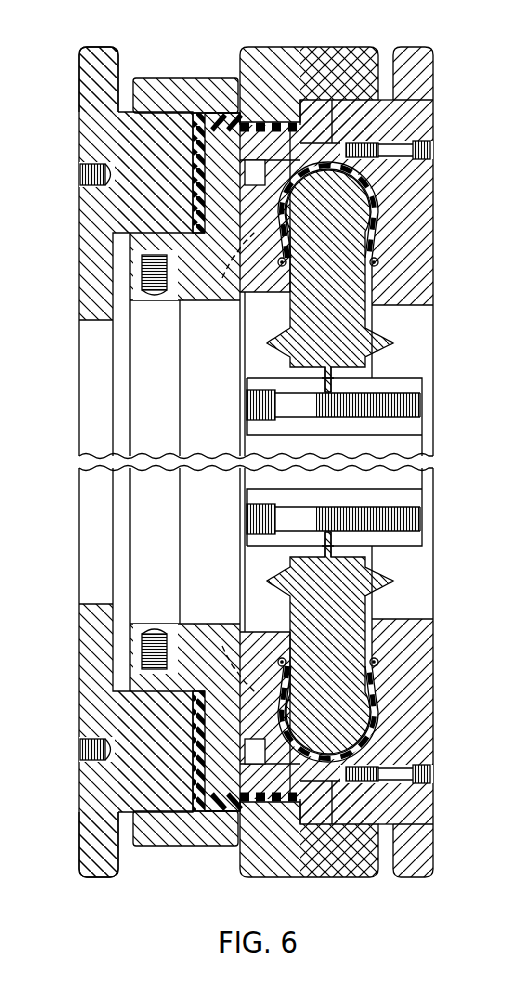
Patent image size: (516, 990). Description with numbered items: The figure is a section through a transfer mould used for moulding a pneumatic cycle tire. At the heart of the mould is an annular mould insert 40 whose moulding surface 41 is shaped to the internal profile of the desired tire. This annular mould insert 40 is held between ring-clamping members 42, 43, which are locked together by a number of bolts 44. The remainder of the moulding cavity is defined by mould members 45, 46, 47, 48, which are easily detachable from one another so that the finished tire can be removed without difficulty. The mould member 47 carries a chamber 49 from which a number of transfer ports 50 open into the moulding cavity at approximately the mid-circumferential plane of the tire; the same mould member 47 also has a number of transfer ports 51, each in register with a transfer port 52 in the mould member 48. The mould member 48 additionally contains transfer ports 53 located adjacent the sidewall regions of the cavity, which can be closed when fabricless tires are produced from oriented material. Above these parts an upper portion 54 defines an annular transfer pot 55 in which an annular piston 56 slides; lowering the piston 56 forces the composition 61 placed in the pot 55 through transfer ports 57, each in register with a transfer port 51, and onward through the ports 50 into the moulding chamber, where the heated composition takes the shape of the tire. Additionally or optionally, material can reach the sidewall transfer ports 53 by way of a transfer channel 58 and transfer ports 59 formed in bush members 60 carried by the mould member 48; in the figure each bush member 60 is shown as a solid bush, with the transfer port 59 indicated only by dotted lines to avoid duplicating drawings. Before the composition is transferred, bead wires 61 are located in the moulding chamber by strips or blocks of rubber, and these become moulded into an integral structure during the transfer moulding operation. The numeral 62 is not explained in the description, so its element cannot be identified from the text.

The annular mould insert 40 is at (300, 305).
The moulding surface 41 is at (405, 150).
The ring-clamping member 42 is at (405, 380).
The ring-clamping member 43 is at (302, 380).
The bolts 44 is at (395, 412).
The mould member 45 is at (395, 168).
The mould member 46 is at (400, 78).
The mould member 47 is at (323, 97).
The mould member 48 is at (243, 125).
The chamber 49 is at (335, 130).
The transfer ports 50 is at (380, 103).
The transfer ports 51 is at (262, 143).
The transfer port 52 is at (248, 120).
The transfer ports 53 is at (292, 208).
The upper portion 54 is at (150, 88).
The annular transfer pot 55 is at (238, 117).
The annular piston 56 is at (155, 210).
The transfer ports 57 is at (193, 137).
The transfer channel 58 is at (197, 80).
The transfer port 59 is at (217, 462).
The bush member 60 is at (228, 110).
The bead wires 61 is at (378, 92).
The pivot pin 62 is at (378, 260).